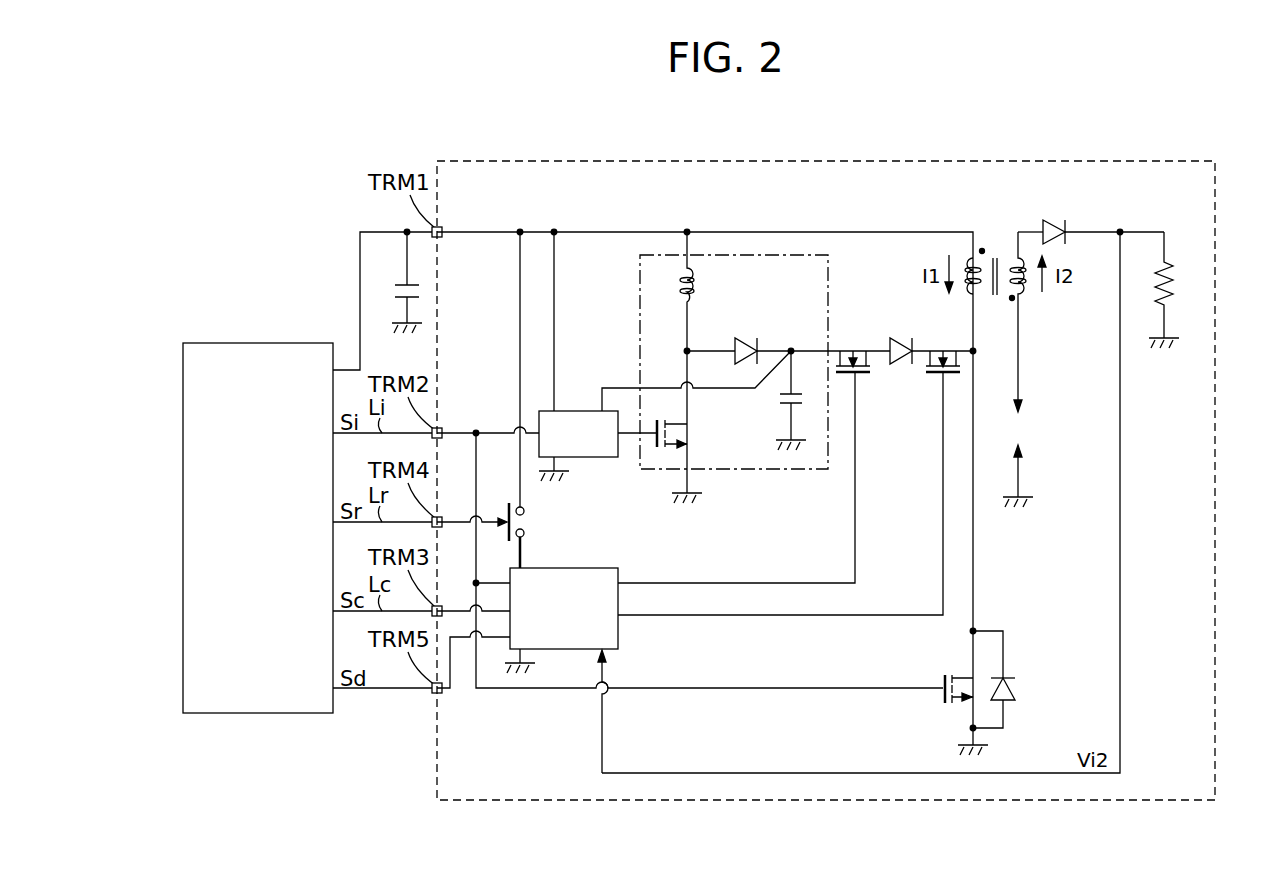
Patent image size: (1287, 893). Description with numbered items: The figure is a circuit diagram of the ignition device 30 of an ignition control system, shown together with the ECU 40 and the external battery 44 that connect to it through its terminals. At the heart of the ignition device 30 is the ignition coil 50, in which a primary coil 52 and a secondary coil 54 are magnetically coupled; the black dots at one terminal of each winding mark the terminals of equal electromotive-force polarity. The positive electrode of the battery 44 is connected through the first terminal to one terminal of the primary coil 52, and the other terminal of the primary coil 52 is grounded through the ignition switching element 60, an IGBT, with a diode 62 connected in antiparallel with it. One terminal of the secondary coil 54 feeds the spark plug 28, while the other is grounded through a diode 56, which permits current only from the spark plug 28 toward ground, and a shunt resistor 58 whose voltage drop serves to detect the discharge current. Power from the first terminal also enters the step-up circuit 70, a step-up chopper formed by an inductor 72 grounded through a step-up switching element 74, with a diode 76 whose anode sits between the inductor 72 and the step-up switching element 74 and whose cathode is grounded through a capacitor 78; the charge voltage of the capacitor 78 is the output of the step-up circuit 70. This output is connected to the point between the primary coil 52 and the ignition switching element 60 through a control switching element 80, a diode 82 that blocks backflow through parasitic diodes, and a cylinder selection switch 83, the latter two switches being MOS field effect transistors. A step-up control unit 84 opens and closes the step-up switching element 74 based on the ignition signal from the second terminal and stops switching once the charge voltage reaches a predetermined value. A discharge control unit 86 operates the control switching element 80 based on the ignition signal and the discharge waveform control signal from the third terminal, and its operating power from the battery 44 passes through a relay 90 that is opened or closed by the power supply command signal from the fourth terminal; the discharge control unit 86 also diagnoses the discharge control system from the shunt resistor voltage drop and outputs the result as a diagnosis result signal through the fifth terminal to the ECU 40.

The spark plug 28 is at (1038, 430).
The ignition device 30 is at (1121, 154).
The ECU 40 is at (291, 343).
The external battery 44 is at (400, 285).
The ignition coil 50 is at (986, 234).
The primary coil 52 is at (978, 295).
The secondary coil 54 is at (1026, 293).
The diode 56 is at (1054, 220).
The shunt resistor 58 is at (1168, 268).
The ignition switching element 60 is at (960, 675).
The diode 62 is at (1018, 687).
The step-up circuit 70 is at (830, 280).
The inductor 72 is at (701, 298).
The step-up switching element 74 is at (678, 422).
The diode 76 is at (748, 338).
The capacitor 78 is at (782, 394).
The control switching element 80 is at (858, 376).
The diode 82 is at (901, 338).
The cylinder selection switch 83 is at (943, 376).
The step-up control unit 84 is at (584, 411).
The discharge control unit 86 is at (581, 568).
The relay 90 is at (506, 511).